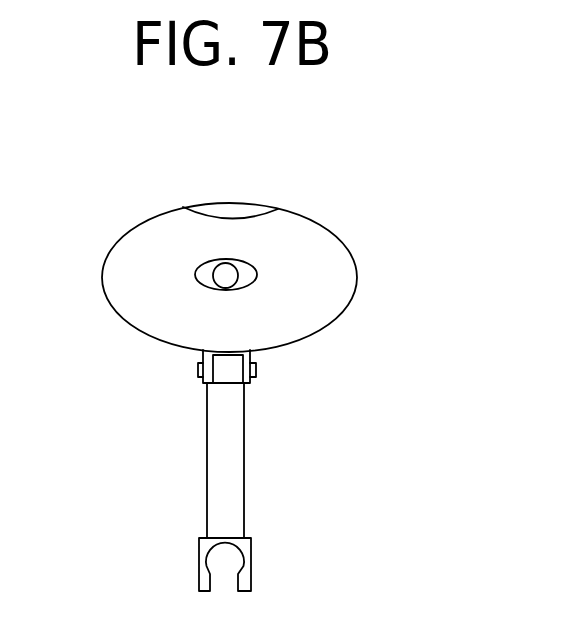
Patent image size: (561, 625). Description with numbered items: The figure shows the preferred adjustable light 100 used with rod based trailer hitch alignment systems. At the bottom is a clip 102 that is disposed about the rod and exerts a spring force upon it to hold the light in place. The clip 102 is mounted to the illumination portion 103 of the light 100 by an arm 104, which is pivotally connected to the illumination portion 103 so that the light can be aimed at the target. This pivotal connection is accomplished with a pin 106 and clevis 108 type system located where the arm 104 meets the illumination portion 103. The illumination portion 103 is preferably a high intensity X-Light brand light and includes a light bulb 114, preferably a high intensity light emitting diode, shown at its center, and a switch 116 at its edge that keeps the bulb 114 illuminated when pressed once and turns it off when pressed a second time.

The adjustable light 100 is at (385, 533).
The clip 102 is at (205, 557).
The illumination portion 103 is at (343, 318).
The arm 104 is at (233, 448).
The pin 106 is at (245, 387).
The clevis 108 is at (205, 354).
The light bulb 114 is at (230, 277).
The switch 116 is at (228, 210).